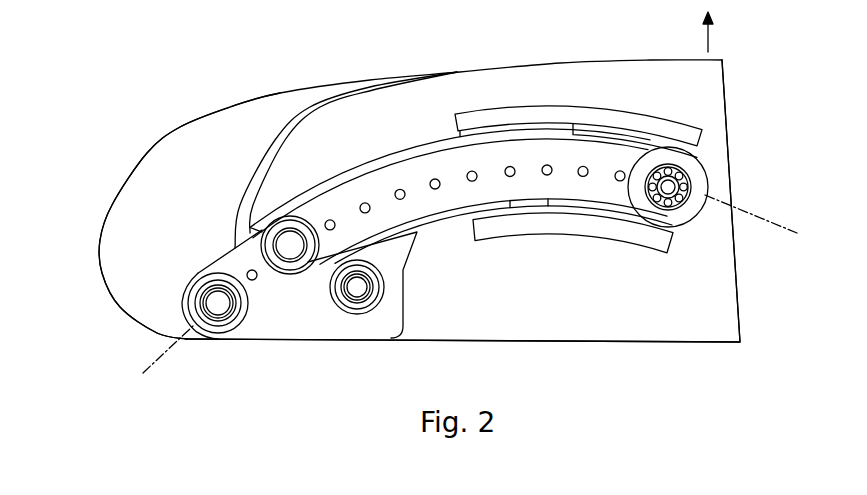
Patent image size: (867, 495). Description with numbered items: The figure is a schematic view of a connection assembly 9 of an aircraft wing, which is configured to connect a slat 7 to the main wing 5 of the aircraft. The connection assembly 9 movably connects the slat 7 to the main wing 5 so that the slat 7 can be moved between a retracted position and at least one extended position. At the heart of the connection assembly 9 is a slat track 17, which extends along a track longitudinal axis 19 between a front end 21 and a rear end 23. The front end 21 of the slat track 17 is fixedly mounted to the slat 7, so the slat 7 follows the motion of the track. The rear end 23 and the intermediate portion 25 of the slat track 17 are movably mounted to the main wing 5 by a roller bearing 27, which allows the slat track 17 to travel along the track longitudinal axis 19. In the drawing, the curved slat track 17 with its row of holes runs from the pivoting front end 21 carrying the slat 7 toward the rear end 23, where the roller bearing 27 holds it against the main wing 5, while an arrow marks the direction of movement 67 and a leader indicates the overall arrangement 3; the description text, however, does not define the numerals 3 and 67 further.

The adjustment device 3 is at (152, 113).
The main wing 5 is at (637, 310).
The slat 7 is at (160, 251).
The connection assembly 9 is at (468, 166).
The slat track 17 is at (413, 162).
The track longitudinal axis 19 is at (782, 230).
The front end 21 is at (293, 313).
The rear end 23 is at (648, 146).
The intermediate portion 25 is at (452, 202).
The roller bearing 27 is at (292, 222).
The direction of movement 67 is at (711, 38).